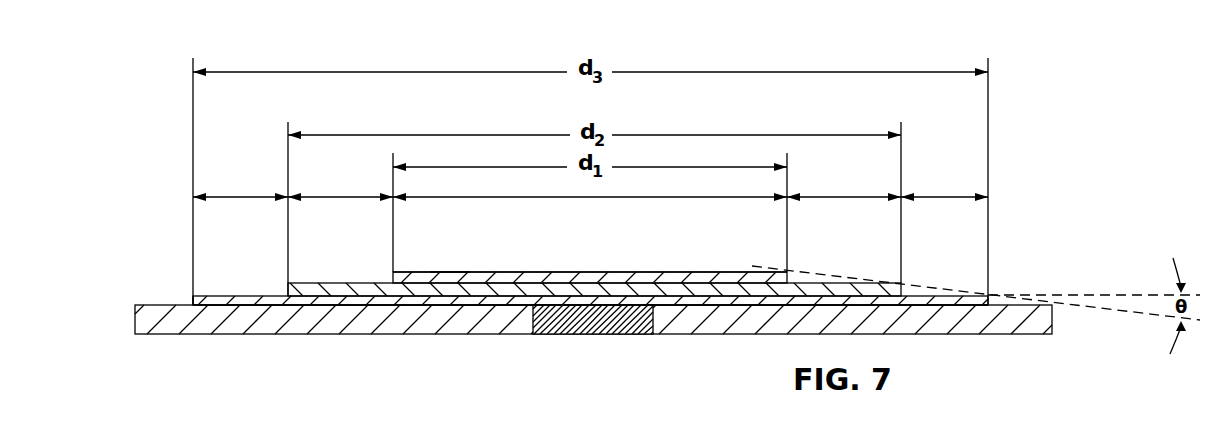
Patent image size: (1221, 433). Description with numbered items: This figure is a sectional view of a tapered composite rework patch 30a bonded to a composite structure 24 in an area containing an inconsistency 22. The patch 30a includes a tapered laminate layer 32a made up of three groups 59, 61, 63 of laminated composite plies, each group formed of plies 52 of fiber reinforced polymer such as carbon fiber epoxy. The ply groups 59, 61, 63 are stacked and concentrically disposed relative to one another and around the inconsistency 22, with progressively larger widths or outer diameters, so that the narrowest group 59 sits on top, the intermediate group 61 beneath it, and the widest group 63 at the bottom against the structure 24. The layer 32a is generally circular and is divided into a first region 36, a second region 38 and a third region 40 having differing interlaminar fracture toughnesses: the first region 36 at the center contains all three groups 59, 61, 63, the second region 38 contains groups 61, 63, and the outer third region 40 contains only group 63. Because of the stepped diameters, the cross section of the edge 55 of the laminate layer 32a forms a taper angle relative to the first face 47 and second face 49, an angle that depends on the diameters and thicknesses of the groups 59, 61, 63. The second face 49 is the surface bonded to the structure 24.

The tapered composite rework patch 30a is at (1008, 92).
The composite structure 24 is at (248, 320).
The inconsistency 22 is at (555, 343).
The ply group 63 is at (216, 300).
The ply group 61 is at (314, 290).
The tapered laminate layer 32a is at (655, 259).
The ply group 59 is at (446, 279).
The first face 47 is at (531, 264).
The plies 52 is at (194, 298).
The second face 49 is at (437, 312).
The edge 55 is at (299, 254).
The third region 40 is at (218, 197).
The second region 38 is at (323, 197).
The first region 36 is at (599, 198).